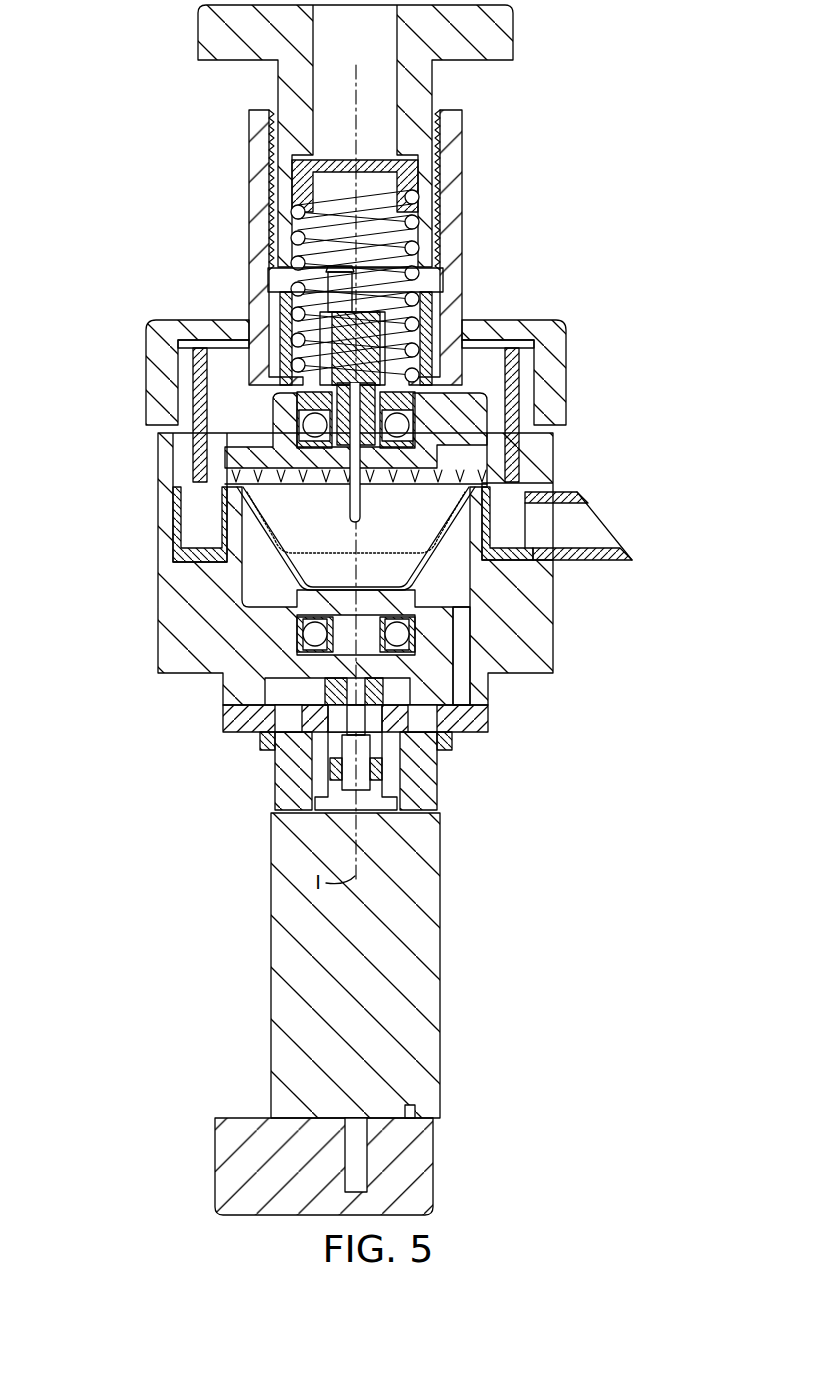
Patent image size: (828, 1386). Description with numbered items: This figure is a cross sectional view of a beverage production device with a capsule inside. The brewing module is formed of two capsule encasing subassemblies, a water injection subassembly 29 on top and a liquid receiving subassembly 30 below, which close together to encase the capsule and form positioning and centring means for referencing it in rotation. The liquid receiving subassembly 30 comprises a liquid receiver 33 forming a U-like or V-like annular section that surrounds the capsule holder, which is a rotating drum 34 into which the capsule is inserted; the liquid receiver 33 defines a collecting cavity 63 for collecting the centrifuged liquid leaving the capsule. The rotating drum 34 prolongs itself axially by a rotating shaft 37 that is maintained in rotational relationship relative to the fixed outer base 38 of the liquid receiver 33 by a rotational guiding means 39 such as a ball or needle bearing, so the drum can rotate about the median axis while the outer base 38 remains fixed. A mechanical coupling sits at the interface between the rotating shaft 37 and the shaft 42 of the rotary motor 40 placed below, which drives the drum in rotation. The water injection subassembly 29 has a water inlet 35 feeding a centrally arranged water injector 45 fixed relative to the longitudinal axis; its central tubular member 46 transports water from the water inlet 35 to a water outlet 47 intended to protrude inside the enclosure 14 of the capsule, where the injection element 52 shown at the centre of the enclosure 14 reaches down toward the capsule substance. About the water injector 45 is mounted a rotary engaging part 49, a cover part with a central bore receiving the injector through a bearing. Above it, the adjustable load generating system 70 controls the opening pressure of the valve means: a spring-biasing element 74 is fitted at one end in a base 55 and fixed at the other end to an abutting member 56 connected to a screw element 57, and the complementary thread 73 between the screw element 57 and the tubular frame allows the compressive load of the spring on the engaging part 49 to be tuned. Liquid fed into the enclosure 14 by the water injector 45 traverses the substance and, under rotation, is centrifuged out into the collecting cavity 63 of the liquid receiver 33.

The screw element 57 is at (457, 84).
The complementary thread 73 is at (440, 144).
The load generating system 70 is at (465, 183).
The abutting member 56 is at (298, 182).
The spring 74 is at (421, 239).
The base 55 is at (284, 315).
The water inlet 35 is at (340, 365).
The water injection subassembly 29 is at (573, 318).
The rotary engaging part 49 is at (269, 428).
The water injector 45 is at (335, 398).
The central tubular member 46 is at (420, 412).
The liquid receiving subassembly 30 is at (150, 433).
The outer base 38 is at (548, 652).
The liquid receiver 33 is at (190, 533).
The enclosure 14 is at (310, 518).
The rotating drum 34 is at (428, 575).
The water outlet 47 is at (356, 524).
The valve stem 52 is at (420, 486).
The collecting cavity 63 is at (517, 537).
The rotational guiding means 39 is at (295, 640).
The rotating shaft 37 is at (480, 730).
The shaft of the motor 42 is at (357, 774).
The rotary motor 40 is at (428, 952).